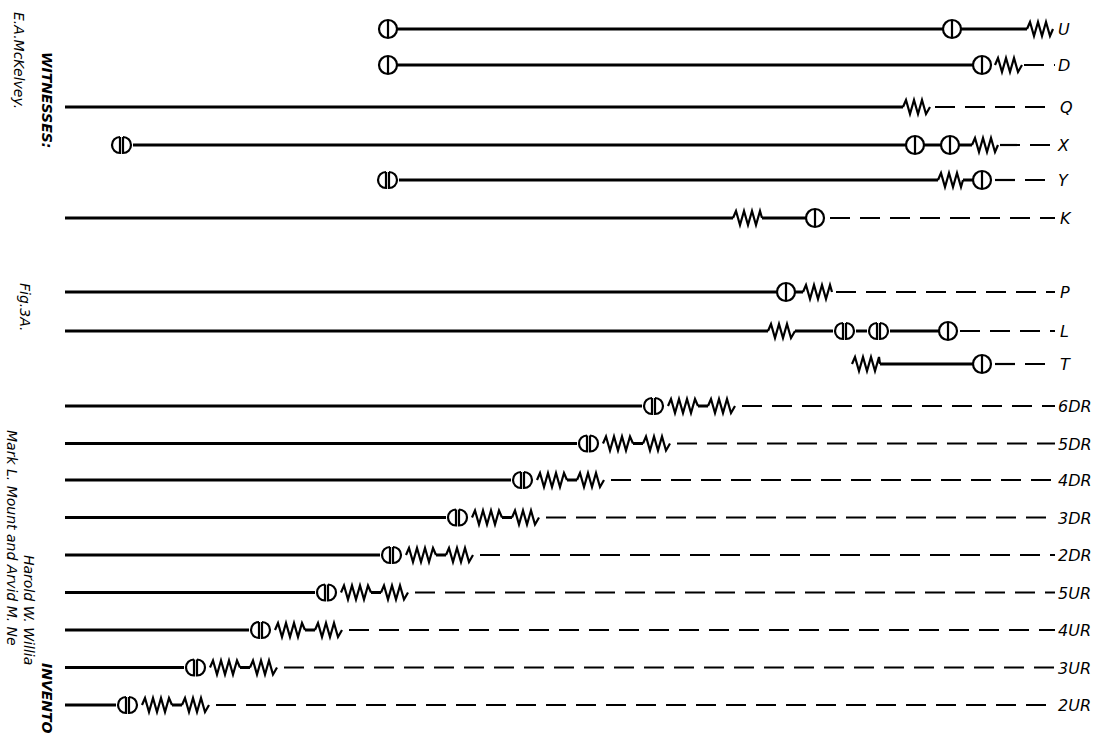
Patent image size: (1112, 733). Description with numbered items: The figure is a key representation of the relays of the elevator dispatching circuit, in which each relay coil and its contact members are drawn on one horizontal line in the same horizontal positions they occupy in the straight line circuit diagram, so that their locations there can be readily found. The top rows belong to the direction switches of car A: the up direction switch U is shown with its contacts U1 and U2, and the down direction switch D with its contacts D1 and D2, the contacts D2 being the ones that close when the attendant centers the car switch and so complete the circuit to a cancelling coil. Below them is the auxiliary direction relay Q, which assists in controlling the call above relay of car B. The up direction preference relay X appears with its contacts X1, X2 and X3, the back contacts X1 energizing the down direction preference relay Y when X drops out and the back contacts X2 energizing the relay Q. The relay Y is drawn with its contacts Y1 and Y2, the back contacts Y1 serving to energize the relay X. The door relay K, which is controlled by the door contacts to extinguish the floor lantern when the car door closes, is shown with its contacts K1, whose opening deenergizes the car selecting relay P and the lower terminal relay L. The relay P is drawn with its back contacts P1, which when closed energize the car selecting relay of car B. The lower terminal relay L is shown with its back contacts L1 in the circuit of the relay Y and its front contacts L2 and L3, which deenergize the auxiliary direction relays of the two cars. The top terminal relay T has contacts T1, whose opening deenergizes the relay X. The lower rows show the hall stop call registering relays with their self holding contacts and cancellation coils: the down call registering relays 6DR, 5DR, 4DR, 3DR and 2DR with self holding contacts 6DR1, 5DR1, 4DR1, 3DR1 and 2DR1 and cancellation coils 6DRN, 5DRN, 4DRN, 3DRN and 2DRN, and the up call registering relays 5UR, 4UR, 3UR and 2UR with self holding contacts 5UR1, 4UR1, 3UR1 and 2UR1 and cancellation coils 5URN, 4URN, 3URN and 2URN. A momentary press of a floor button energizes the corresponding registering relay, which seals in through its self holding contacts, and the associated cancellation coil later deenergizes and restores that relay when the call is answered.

The up direction switch contacts U2 is at (378, 31).
The up direction switch contacts U1 is at (944, 34).
The up direction switch U is at (1024, 33).
The down direction switch contacts D2 is at (378, 67).
The down direction switch contacts D1 is at (976, 72).
The down direction switch D is at (1008, 72).
The auxiliary direction relay Q is at (903, 100).
The up direction preference relay contacts X3 is at (108, 147).
The up direction preference relay back contacts X2 is at (908, 139).
The up direction preference relay back contacts X1 is at (946, 139).
The up direction preference relay X is at (987, 138).
The down direction preference relay contacts Y2 is at (372, 182).
The down direction preference relay Y is at (944, 173).
The down direction preference relay back contacts Y1 is at (988, 173).
The door relay K is at (753, 211).
The door relay contacts K1 is at (824, 212).
The car selecting relay back contacts P1 is at (780, 284).
The car selecting relay P is at (821, 283).
The lower terminal relay L is at (772, 324).
The lower terminal relay front contacts L3 is at (844, 323).
The lower terminal relay front contacts L2 is at (876, 323).
The lower terminal relay back contacts L1 is at (951, 322).
The top terminal relay T is at (852, 364).
The top terminal relay contacts T1 is at (987, 357).
The self holding contacts of sixth floor down call registering relay 6DR1 is at (609, 398).
The cancellation coil for sixth floor down call 6DRN is at (666, 396).
The down call registering relay for sixth floor 6DR is at (729, 396).
The self holding contacts of fifth floor down call registering relay 5DR1 is at (544, 436).
The cancellation coil for fifth floor down call 5DRN is at (601, 434).
The down call registering relay for fifth floor 5DR is at (664, 434).
The self holding contacts of fourth floor down call registering relay 4DR1 is at (478, 472).
The cancellation coil for fourth floor down call 4DRN is at (535, 470).
The down call registering relay for fourth floor 4DR is at (598, 470).
The self holding contacts of third floor down call registering relay 3DR1 is at (413, 510).
The cancellation coil for third floor down call 3DRN is at (470, 508).
The down call registering relay for third floor 3DR is at (533, 508).
The self holding contacts of second floor down call registering relay 2DR1 is at (347, 547).
The cancellation coil for second floor down call 2DRN is at (404, 545).
The down call registering relay for second floor 2DR is at (467, 545).
The self holding contacts of fifth floor up call registering relay 5UR1 is at (282, 585).
The cancellation coil for fifth floor up call 5URN is at (339, 583).
The up call registering relay for fifth floor 5UR is at (402, 583).
The self holding contacts of fourth floor up call registering relay 4UR1 is at (216, 622).
The cancellation coil for fourth floor up call 4URN is at (273, 620).
The up call registering relay for fourth floor 4UR is at (336, 620).
The self holding contacts of third floor up call registering relay 3UR1 is at (151, 660).
The cancellation coil for third floor up call 3URN is at (208, 658).
The up call registering relay for third floor 3UR is at (271, 658).
The self holding contacts of second floor up call registering relay 2UR1 is at (101, 696).
The cancellation coil for second floor up call 2URN is at (144, 695).
The up call registering relay for second floor 2UR is at (203, 695).